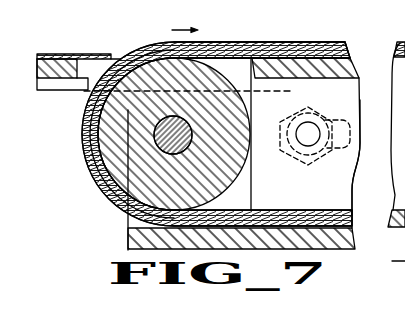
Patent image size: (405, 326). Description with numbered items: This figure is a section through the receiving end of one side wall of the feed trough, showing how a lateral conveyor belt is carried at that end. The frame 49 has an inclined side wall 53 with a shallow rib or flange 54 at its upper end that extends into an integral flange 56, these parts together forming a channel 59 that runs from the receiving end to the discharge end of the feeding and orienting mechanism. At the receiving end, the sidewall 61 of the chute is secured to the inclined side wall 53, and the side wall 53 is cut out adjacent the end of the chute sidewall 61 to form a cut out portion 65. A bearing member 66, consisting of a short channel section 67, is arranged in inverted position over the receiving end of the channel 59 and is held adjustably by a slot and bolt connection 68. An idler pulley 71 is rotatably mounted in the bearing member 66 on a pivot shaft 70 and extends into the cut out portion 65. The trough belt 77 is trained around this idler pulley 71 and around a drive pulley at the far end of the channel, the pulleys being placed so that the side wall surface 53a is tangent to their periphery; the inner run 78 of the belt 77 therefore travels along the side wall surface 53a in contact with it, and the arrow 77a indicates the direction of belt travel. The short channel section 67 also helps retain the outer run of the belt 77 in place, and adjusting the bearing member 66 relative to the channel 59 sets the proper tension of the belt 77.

The frame 49 is at (348, 158).
The inclined side wall 53 is at (303, 67).
The side wall surface 53a is at (273, 57).
The shallow rib or flange 54 is at (82, 79).
The integral flange 56 is at (318, 189).
The channel 59 is at (344, 88).
The chute sidewall 61 is at (78, 55).
The cut out portion 65 is at (237, 68).
The bearing member 66 is at (124, 226).
The short channel section 67 is at (338, 244).
The slot and bolt connection 68 is at (305, 132).
The pivot shaft 70 is at (190, 139).
The idler pulley 71 is at (82, 152).
The trough belt 77 is at (222, 42).
The direction of belt travel 77a is at (186, 29).
The inner run 78 is at (302, 38).